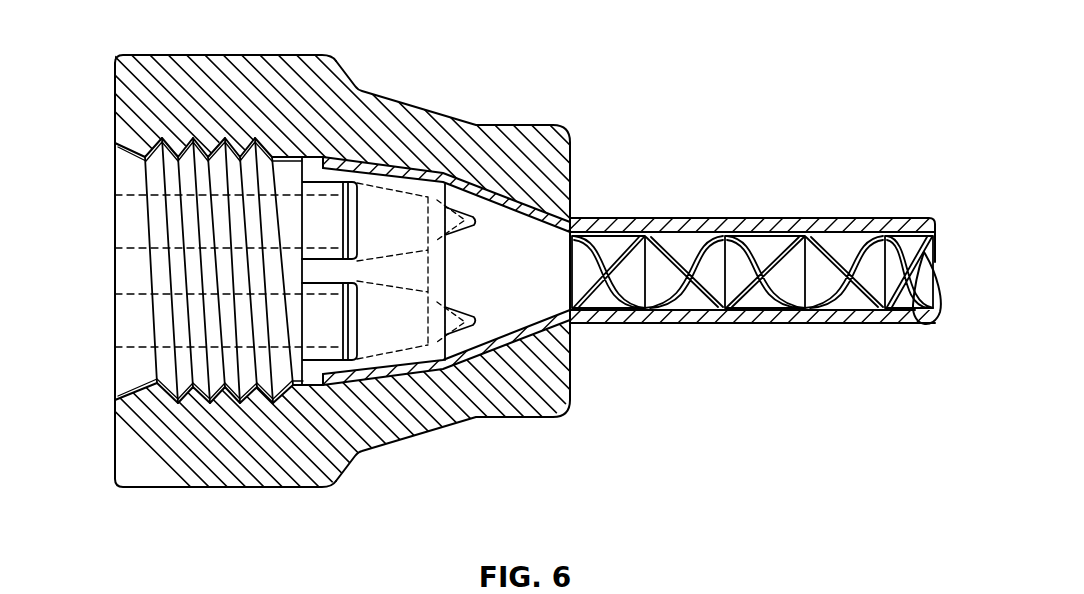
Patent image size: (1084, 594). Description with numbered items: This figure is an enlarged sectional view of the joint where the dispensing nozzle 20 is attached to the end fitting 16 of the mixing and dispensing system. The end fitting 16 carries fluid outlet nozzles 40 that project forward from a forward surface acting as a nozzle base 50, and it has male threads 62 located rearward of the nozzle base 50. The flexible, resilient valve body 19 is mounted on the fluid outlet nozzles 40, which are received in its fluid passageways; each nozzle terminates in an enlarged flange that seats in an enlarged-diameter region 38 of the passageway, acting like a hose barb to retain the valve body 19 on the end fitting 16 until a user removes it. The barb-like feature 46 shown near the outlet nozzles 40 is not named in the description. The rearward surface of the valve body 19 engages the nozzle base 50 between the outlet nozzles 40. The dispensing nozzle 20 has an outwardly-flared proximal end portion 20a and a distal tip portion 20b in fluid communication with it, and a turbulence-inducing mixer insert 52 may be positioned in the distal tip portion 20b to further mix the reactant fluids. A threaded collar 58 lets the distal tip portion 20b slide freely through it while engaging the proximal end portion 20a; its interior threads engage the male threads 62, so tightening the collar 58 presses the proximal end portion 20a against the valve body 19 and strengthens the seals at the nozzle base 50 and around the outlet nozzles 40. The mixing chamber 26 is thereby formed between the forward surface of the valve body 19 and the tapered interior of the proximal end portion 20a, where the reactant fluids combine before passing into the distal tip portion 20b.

The end fitting 16 is at (127, 178).
The valve body 19 is at (402, 177).
The dispensing nozzle 20 is at (542, 253).
The proximal end portion 20a is at (503, 170).
The distal tip portion 20b is at (795, 218).
The mixing chamber 26 is at (540, 242).
The enlarged-diameter region 38 is at (362, 162).
The fluid outlet nozzle 40 is at (326, 188).
The barb 46 is at (458, 235).
The nozzle base 50 is at (330, 272).
The mixer insert 52 is at (784, 244).
The threaded collar 58 is at (572, 385).
The male threads 62 is at (208, 137).